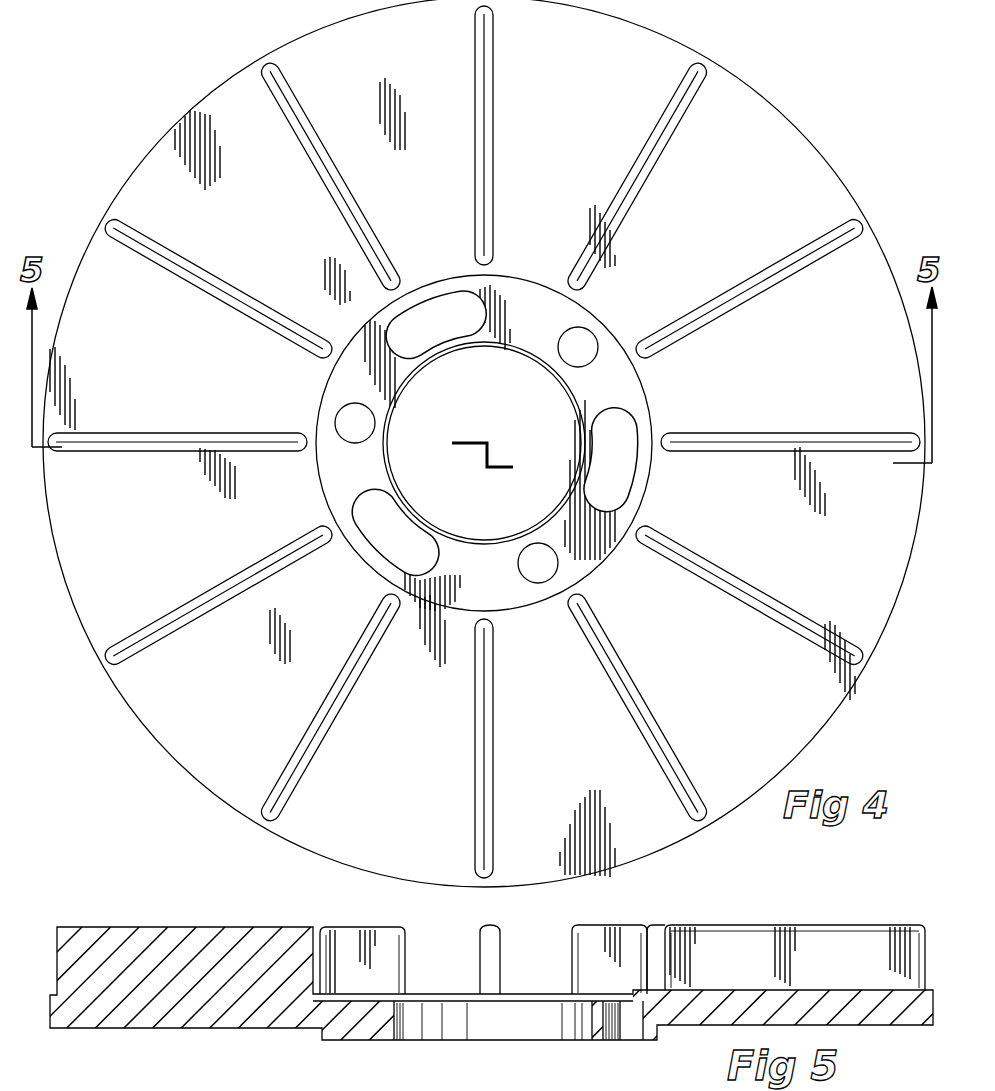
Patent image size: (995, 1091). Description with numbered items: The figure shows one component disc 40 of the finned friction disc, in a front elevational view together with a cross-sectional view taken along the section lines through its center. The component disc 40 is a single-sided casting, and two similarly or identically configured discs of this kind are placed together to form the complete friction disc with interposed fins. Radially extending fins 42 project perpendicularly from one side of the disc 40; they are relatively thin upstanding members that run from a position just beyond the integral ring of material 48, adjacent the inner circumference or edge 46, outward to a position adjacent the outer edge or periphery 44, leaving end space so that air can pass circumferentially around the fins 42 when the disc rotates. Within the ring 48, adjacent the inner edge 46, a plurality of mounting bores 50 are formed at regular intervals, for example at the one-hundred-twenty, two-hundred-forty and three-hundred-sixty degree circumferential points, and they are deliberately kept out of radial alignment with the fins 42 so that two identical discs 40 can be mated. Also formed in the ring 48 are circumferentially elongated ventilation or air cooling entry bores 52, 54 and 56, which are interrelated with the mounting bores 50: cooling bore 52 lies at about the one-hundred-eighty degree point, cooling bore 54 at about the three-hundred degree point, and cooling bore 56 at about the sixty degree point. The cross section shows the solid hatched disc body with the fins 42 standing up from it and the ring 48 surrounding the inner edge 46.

In FIG. 4, the component disc 40 is at (175, 66).
In FIG. 5, the component disc 40 is at (238, 900).
In FIG. 4, the radially extending fins 42 is at (703, 64).
In FIG. 5, the radially extending fins 42 is at (57, 930).
In FIG. 4, the outer edge or periphery 44 is at (764, 100).
In FIG. 5, the outer edge or periphery 44 is at (50, 1018).
In FIG. 4, the inner circumference or edge 46 is at (497, 344).
In FIG. 5, the inner circumference or edge 46 is at (394, 1040).
In FIG. 4, the integral ring of material 48 is at (493, 581).
In FIG. 5, the integral ring of material 48 is at (427, 995).
In FIG. 4, the mounting bores 50 is at (562, 353).
In FIG. 4, the cooling bore 52 is at (598, 430).
In FIG. 5, the cooling bore 52 is at (640, 1030).
In FIG. 4, the cooling bore 54 is at (392, 508).
In FIG. 4, the cooling bore 56 is at (440, 343).